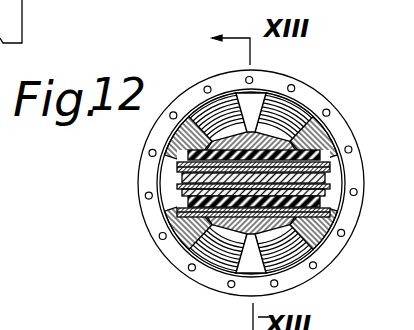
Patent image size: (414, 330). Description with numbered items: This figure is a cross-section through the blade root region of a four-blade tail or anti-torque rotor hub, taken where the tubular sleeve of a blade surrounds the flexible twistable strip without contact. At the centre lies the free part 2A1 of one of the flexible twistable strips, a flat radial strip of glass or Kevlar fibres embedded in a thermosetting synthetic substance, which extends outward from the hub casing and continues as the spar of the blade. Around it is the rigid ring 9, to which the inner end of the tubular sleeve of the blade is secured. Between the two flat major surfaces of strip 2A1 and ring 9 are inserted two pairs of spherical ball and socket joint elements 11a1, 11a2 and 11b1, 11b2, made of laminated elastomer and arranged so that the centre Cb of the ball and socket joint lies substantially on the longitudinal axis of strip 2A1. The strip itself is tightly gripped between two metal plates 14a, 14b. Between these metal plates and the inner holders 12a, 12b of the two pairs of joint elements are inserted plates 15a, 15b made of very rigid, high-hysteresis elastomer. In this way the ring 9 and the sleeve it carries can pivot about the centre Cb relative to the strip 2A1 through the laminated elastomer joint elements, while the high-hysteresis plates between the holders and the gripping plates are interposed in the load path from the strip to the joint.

The rigid ring 9 is at (352, 202).
The spherical ball and socket joint element 11b1 is at (207, 140).
The spherical ball and socket joint element 11b2 is at (286, 127).
The spherical ball and socket joint element 11a1 is at (200, 256).
The spherical ball and socket joint element 11a2 is at (296, 262).
The inner holder 12b is at (253, 128).
The inner holder 12a is at (243, 280).
The metal plate 14b is at (195, 152).
The metal plate 14a is at (210, 210).
The plate of high-hysteresis elastomer 15b is at (320, 161).
The plate of high-hysteresis elastomer 15a is at (325, 206).
The free part of flexible twistable strip 2A1 is at (195, 183).
The centre of the ball and socket joint Cb is at (300, 148).